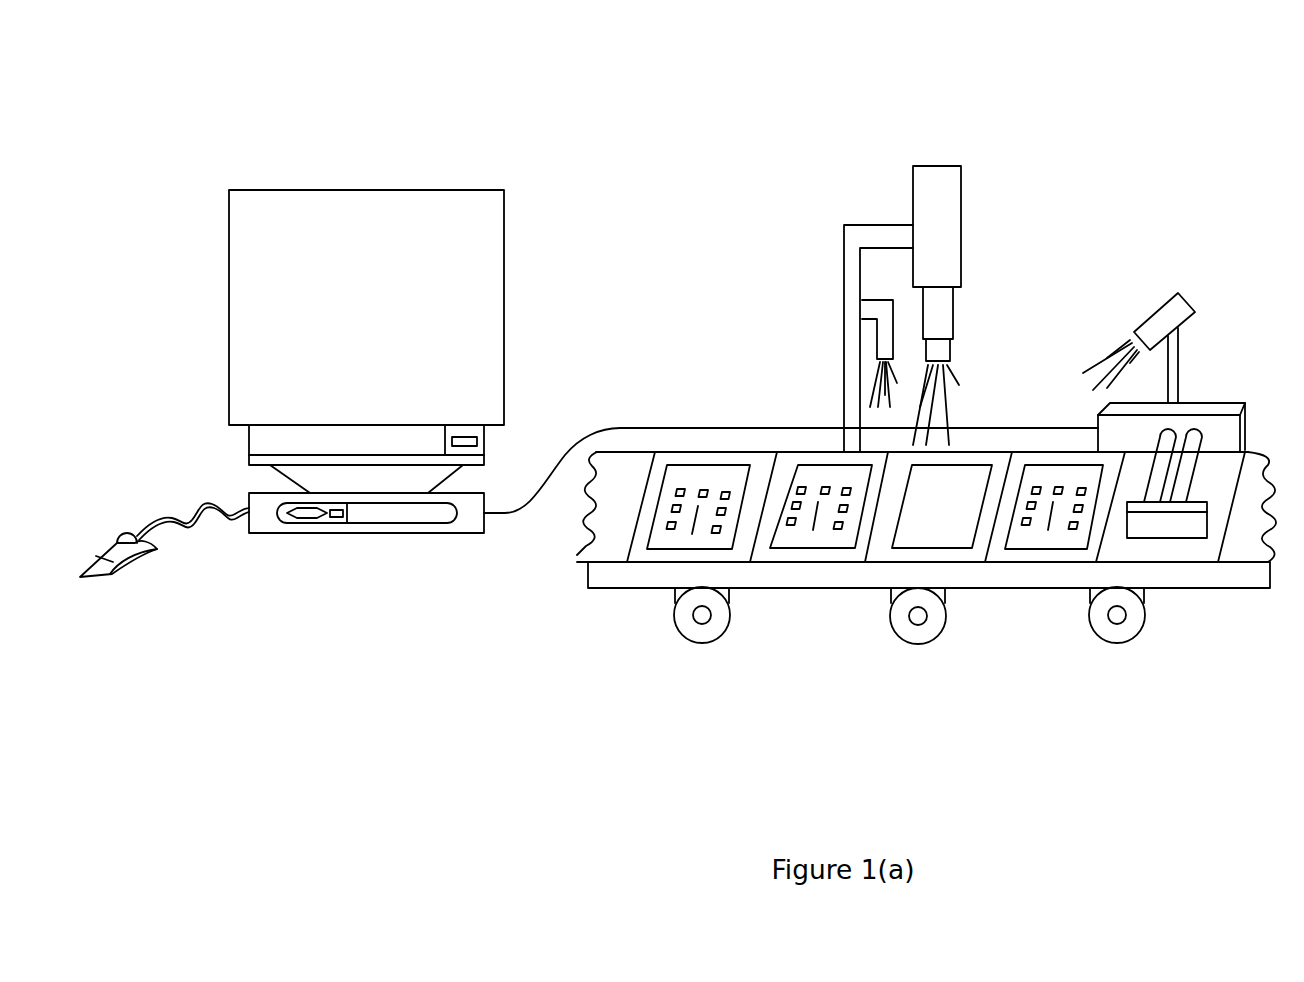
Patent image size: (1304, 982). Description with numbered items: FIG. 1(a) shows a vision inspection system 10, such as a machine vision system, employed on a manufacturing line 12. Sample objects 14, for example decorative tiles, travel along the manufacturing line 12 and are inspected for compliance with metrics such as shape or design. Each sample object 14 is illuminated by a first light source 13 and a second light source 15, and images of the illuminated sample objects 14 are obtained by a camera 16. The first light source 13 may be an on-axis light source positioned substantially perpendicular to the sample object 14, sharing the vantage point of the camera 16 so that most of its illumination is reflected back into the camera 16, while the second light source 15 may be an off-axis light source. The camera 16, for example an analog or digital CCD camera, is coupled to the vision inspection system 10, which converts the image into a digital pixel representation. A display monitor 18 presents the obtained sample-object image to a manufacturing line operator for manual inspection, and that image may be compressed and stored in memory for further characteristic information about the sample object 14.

The vision inspection system 10 is at (190, 103).
The manufacturing line 12 is at (655, 646).
The first light source 13 is at (886, 339).
The sample object 14 is at (911, 529).
The second light source 15 is at (1186, 300).
The camera 16 is at (902, 309).
The display monitor 18 is at (492, 258).